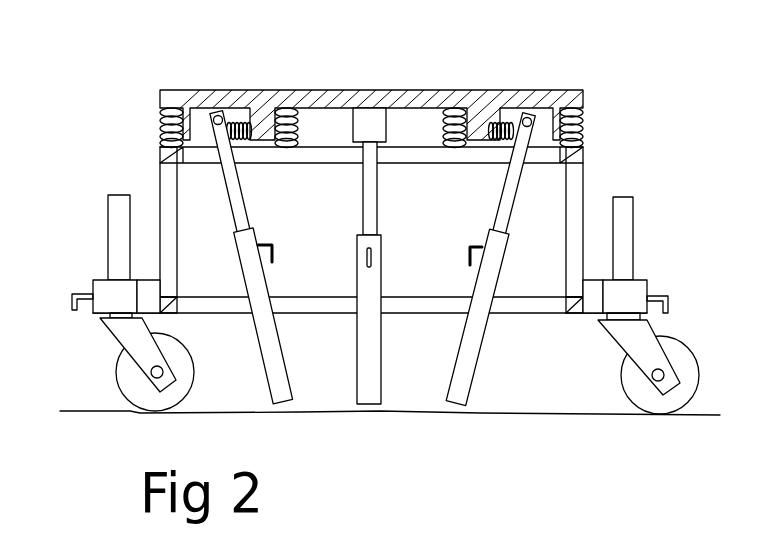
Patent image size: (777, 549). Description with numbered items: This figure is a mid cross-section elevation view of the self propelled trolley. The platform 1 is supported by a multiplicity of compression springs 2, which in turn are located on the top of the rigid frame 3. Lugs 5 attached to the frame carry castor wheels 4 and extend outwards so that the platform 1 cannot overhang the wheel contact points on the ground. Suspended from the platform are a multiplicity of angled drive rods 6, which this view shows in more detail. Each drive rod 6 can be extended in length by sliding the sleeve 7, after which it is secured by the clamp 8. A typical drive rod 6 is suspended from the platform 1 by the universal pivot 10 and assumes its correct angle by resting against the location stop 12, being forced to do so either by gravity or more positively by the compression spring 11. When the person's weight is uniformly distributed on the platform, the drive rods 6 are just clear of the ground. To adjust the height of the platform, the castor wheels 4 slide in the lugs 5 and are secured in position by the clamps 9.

The platform 1 is at (368, 107).
The compression springs 2 is at (584, 128).
The rigid frame 3 is at (165, 198).
The castor wheels 4 is at (672, 353).
The lugs 5 is at (630, 297).
The angled drive rods 6 is at (235, 198).
The sleeve 7 is at (485, 290).
The clamp 8 is at (466, 243).
The clamps 9 is at (67, 296).
The universal pivot 10 is at (221, 113).
The compression spring 11 is at (242, 124).
The location stop 12 is at (207, 117).